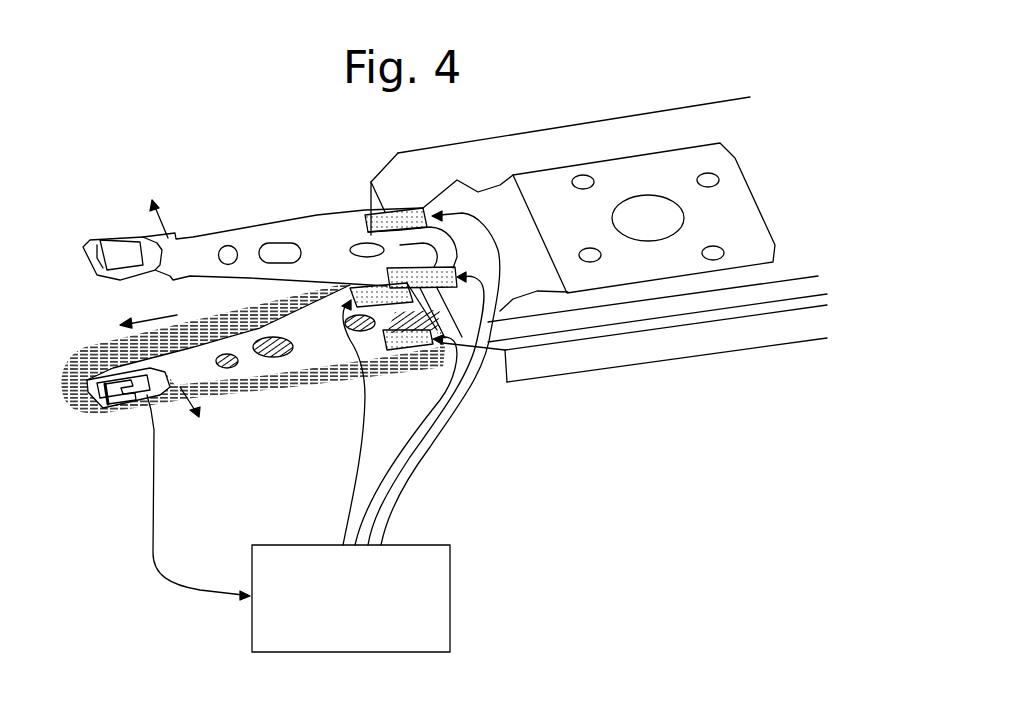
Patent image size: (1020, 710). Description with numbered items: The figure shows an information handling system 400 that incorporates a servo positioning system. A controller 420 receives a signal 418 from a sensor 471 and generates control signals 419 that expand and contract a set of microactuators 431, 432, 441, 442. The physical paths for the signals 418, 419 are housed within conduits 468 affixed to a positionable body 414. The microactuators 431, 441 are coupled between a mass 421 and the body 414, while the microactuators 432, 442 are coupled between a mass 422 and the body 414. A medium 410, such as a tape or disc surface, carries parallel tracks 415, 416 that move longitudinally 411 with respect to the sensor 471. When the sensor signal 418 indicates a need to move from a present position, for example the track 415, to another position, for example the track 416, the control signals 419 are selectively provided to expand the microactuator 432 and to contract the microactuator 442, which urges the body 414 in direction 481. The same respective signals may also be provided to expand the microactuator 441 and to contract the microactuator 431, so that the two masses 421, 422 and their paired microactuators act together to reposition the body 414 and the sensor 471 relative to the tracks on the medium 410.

The information handling system 400 is at (150, 118).
The medium 410 is at (85, 347).
The longitudinal direction 411 is at (147, 312).
The positionable body 414 is at (552, 367).
The track 415 is at (64, 399).
The track 416 is at (78, 405).
The signal 418 is at (150, 555).
The control signals 419 is at (380, 470).
The controller 420 is at (367, 609).
The mass 421 is at (247, 373).
The mass 422 is at (248, 232).
The microactuator 431 is at (427, 346).
The microactuator 432 is at (383, 285).
The microactuator 441 is at (347, 298).
The microactuator 442 is at (367, 214).
The conduits 468 is at (620, 313).
The sensor 471 is at (137, 392).
The direction 481 is at (205, 419).